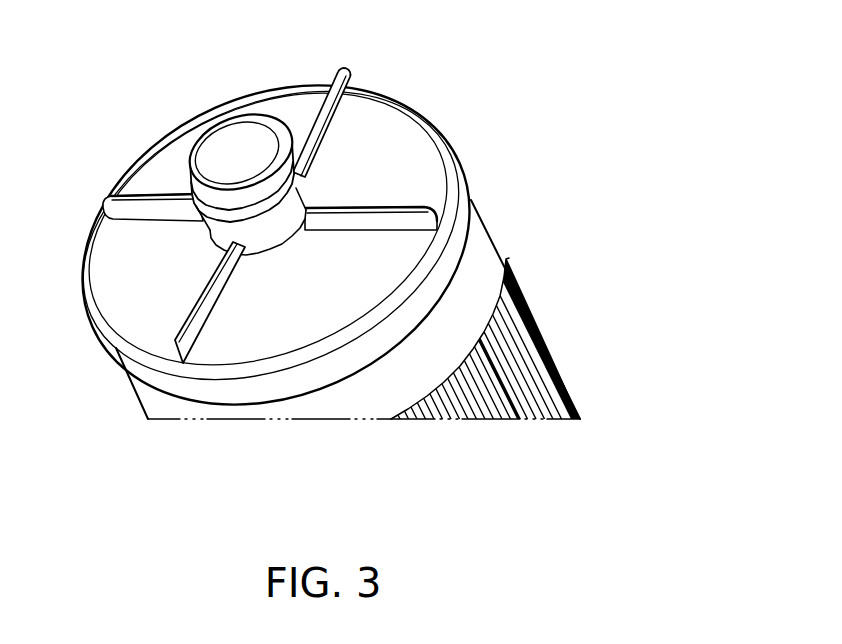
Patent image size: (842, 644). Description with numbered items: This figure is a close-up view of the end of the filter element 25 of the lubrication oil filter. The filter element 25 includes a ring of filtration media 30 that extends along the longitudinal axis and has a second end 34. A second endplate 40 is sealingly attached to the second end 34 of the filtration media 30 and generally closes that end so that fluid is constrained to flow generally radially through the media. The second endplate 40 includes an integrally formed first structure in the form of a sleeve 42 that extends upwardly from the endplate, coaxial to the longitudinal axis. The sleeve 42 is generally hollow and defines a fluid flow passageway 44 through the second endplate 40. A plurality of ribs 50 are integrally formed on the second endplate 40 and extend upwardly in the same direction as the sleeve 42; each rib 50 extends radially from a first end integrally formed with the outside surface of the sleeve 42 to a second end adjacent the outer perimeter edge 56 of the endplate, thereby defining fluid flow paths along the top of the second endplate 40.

The filter element 25 is at (592, 365).
The ring of filtration media 30 is at (523, 328).
The second end 34 is at (484, 227).
The second endplate 40 is at (364, 115).
The first structure (sleeve) 42 is at (268, 222).
The fluid flow passageway 44 is at (242, 152).
The ribs 50 is at (323, 110).
The outer perimeter edge 56 is at (420, 108).